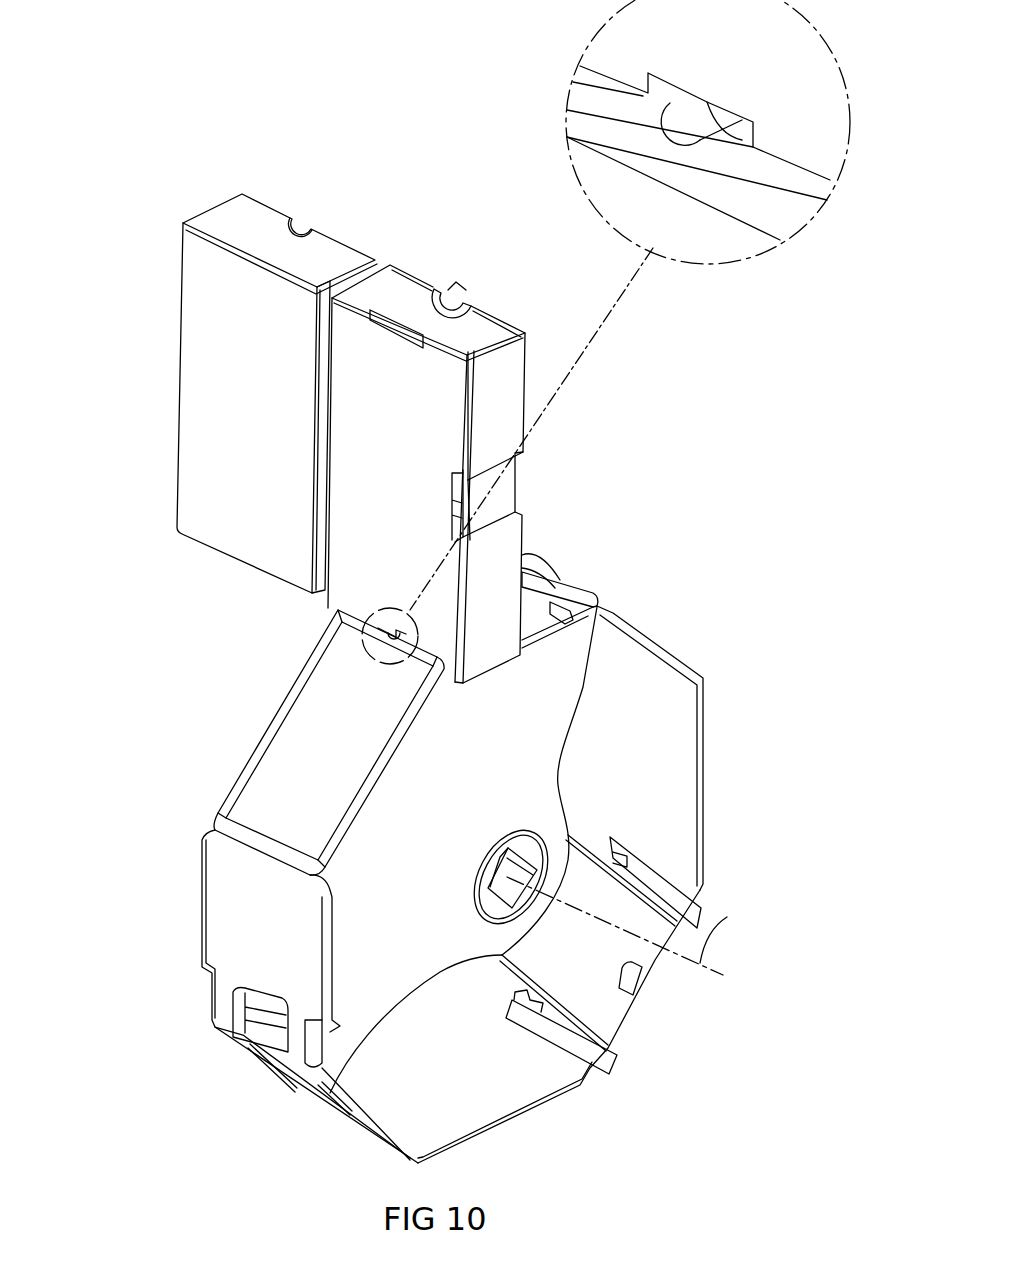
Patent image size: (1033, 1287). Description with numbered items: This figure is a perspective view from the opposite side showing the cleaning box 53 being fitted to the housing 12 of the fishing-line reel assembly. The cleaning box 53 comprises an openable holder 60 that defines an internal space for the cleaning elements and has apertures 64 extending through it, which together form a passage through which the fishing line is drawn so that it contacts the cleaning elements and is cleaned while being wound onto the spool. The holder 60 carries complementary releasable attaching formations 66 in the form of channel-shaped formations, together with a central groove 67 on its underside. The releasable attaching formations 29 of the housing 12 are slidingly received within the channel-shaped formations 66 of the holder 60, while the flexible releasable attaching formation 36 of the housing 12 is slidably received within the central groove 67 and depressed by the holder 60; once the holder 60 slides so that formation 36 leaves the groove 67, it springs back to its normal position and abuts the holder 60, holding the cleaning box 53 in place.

The housing 12 is at (488, 858).
The releasable attaching formations 29 is at (547, 627).
The releasable attaching formation 36 is at (723, 118).
The cleaning box 53 is at (519, 477).
The holder 60 is at (458, 474).
The apertures 64 is at (305, 230).
The complementary releasable attaching formation 66 is at (440, 678).
The central groove 67 is at (672, 95).